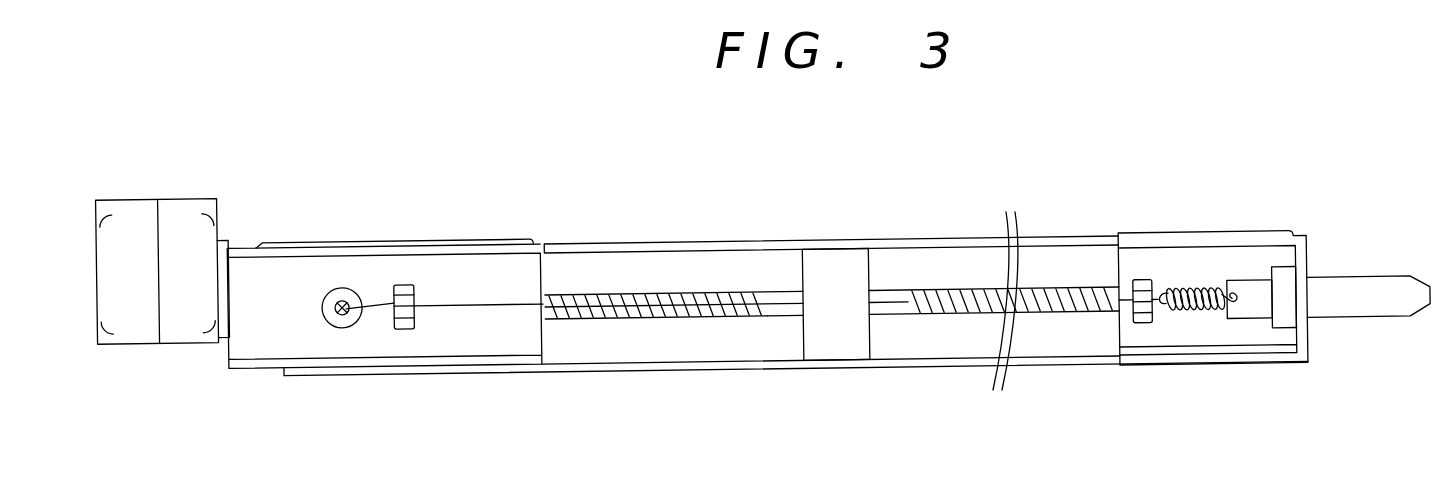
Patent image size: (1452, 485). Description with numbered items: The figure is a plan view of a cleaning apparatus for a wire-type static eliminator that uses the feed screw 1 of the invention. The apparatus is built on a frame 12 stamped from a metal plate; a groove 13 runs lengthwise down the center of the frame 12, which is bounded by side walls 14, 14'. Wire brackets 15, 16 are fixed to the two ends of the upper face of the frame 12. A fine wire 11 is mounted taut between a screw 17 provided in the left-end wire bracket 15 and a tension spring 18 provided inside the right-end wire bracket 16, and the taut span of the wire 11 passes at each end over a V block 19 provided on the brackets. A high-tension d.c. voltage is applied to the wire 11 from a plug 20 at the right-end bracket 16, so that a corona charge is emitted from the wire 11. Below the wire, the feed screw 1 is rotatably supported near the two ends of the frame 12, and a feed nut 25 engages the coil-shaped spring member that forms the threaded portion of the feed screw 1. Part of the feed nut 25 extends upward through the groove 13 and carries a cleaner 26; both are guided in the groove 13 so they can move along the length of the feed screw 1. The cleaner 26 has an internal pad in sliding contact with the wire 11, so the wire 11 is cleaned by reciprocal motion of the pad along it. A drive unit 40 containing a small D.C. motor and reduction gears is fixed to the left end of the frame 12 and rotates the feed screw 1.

The feed screw 1 is at (687, 295).
The wire 11 is at (517, 306).
The frame 12 is at (600, 350).
The groove 13 is at (650, 318).
The side wall 14 is at (796, 406).
The side wall 14' is at (831, 195).
The wire bracket 15 is at (469, 276).
The wire bracket 16 is at (1280, 262).
The screw 17 is at (335, 326).
The tension spring 18 is at (1200, 292).
The V block 19 is at (398, 284).
The plug 20 is at (1370, 290).
The feed nut 25 is at (898, 287).
The cleaner 26 is at (845, 267).
The drive unit 40 is at (178, 204).